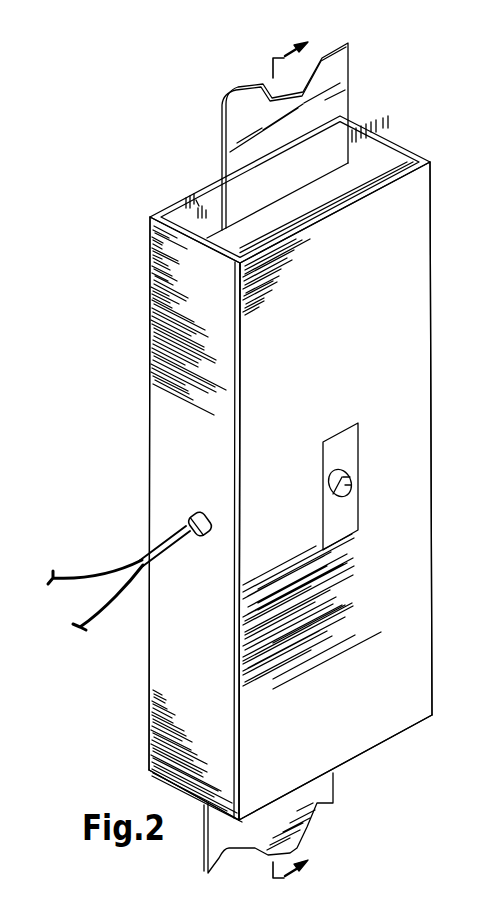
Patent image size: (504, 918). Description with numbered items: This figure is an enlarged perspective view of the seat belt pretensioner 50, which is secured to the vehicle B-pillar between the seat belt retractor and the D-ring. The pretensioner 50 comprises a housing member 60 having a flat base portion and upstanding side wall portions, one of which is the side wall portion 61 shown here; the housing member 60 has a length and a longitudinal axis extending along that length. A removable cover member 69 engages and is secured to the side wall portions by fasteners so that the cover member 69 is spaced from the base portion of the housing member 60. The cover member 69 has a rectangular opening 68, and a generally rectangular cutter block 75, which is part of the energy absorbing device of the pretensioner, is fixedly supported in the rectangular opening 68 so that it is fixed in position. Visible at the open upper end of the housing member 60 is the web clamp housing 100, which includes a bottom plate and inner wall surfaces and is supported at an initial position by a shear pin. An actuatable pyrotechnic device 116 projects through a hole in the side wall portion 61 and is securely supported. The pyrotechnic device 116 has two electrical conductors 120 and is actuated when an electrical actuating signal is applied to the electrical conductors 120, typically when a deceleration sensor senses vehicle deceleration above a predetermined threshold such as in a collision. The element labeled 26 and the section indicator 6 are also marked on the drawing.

The seat belt pretensioner 50 is at (131, 154).
The housing member 60 is at (137, 287).
The side wall portion 61 is at (183, 398).
The cover member 69 is at (372, 287).
The web clamp housing 100 is at (363, 168).
The plate 26 is at (322, 74).
The rectangular opening 68 is at (356, 456).
The cutter block 75 is at (369, 472).
The pyrotechnic device 116 is at (181, 517).
The electrical conductors 120 is at (128, 558).
The section line 6- 6 is at (298, 451).